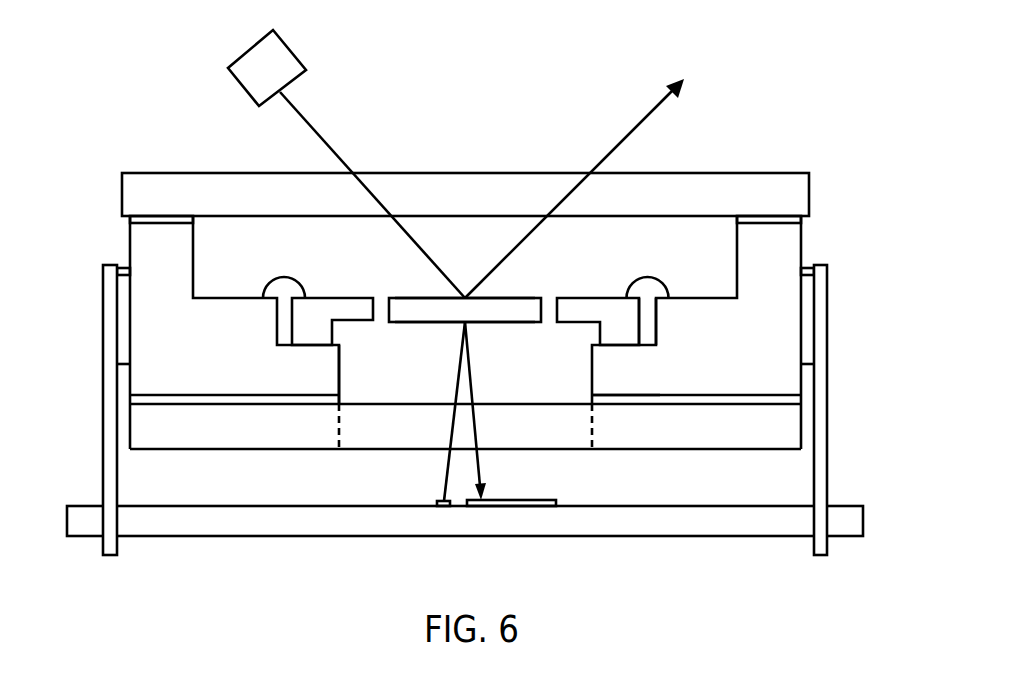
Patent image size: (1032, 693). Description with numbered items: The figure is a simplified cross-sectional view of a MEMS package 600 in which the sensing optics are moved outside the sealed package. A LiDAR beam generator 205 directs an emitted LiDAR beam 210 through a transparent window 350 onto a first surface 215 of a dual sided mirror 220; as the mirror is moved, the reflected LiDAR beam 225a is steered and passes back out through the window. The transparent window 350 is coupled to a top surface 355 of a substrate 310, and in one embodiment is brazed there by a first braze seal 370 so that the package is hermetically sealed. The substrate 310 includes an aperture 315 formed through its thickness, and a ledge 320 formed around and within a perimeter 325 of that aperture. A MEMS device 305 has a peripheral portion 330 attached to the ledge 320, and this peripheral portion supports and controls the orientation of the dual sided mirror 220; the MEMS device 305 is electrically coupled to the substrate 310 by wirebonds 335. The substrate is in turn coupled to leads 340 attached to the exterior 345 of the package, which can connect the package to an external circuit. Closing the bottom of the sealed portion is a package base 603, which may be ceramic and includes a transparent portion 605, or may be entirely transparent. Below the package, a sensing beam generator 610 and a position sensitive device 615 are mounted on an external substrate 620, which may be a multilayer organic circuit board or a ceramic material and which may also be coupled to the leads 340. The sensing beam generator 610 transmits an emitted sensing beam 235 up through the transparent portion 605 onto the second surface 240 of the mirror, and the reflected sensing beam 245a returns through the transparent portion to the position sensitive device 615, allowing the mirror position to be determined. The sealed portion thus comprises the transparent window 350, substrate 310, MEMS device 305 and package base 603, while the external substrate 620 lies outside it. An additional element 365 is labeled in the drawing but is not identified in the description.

The MEMS package 600 is at (112, 97).
The LiDAR beam generator 205 is at (228, 72).
The emitted LiDAR beam 210 is at (300, 108).
The reflected LiDAR beam 225a is at (604, 157).
The transparent window 350 is at (451, 197).
The top surface 355 is at (143, 218).
The first braze seal 370 is at (788, 219).
The exterior 345 is at (800, 347).
The transparent portion 605 is at (562, 426).
The package base 603 is at (753, 423).
The aperture 315 is at (592, 375).
The support plate upper surface 365 is at (630, 397).
The ledge 320 is at (307, 348).
The peripheral portion 330 is at (318, 312).
The perimeter 325 is at (337, 370).
The substrate 310 is at (768, 258).
The wirebonds 335 is at (650, 280).
The MEMS device 305 is at (628, 324).
The first surface 215 is at (504, 294).
The dual sided mirror 220 is at (541, 296).
The second surface 240 is at (527, 323).
The emitted sensing beam 235 is at (451, 422).
The reflected sensing beam 245a is at (496, 438).
The external substrate 620 is at (750, 518).
The leads 340 is at (828, 451).
The sensing beam generator 610 is at (441, 508).
The position sensitive device 615 is at (526, 508).